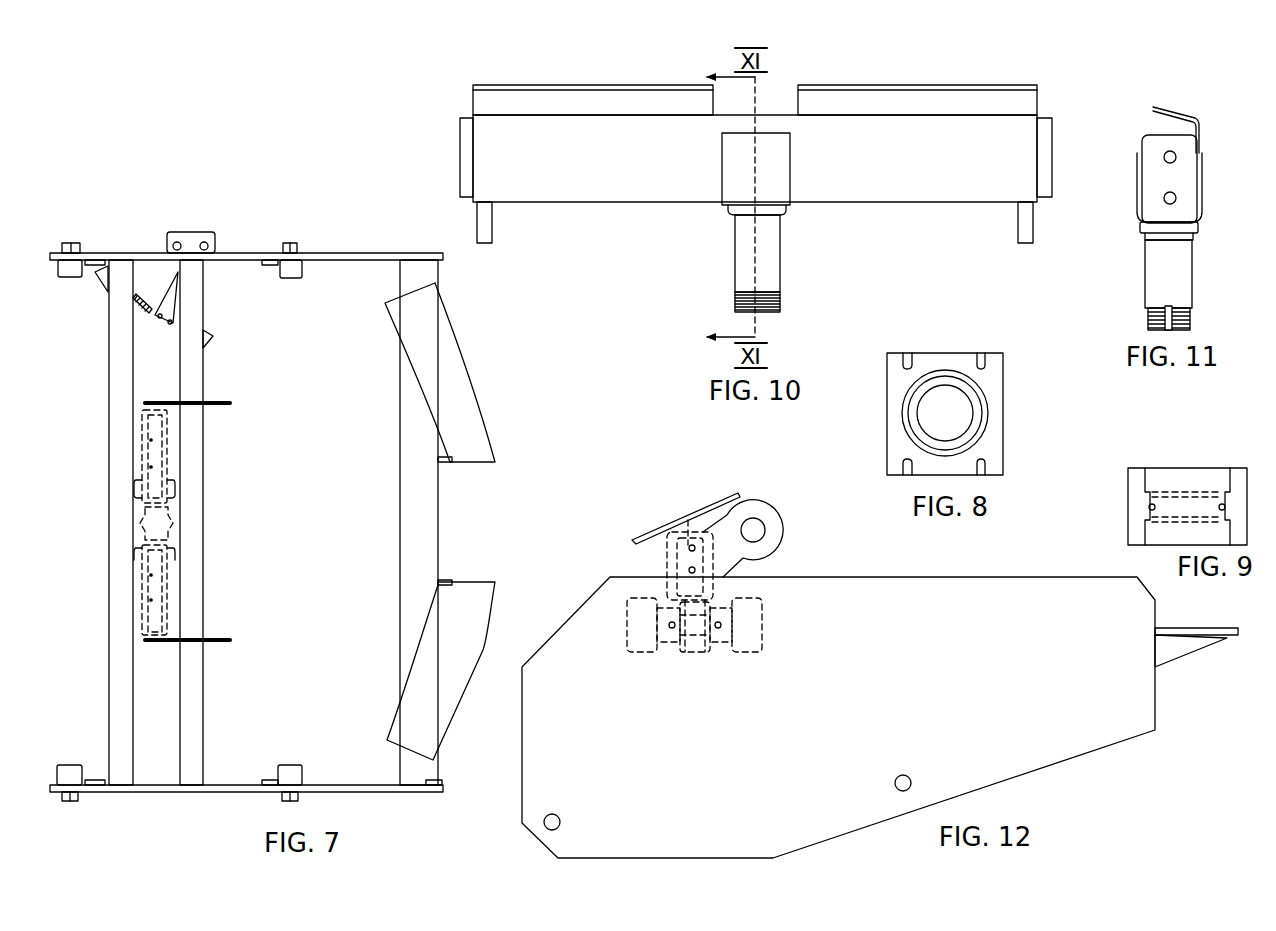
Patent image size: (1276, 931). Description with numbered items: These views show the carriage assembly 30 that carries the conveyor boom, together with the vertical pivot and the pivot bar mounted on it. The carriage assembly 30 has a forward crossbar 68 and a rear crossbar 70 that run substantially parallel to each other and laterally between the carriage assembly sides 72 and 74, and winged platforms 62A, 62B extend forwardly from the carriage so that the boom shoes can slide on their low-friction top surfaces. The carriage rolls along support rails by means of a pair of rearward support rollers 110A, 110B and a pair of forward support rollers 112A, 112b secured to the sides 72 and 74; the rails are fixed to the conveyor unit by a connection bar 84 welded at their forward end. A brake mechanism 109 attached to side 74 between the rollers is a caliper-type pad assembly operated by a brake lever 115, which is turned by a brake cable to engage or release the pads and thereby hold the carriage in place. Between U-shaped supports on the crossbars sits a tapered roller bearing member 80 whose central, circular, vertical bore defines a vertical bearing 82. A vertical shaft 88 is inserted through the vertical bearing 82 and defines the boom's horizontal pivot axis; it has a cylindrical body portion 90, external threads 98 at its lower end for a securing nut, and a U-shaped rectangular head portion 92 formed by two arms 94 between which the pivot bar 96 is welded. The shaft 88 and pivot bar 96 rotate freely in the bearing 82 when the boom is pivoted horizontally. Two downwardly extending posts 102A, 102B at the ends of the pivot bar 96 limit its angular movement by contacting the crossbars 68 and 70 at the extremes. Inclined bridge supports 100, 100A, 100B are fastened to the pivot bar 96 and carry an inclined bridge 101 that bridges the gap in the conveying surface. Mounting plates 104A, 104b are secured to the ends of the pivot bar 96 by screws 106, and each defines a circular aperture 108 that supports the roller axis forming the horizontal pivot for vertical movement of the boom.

In FIG. 7, the carriage assembly 30 is at (447, 533).
In FIG. 7, the winged platform 62A is at (440, 712).
In FIG. 12, the winged platform 62A is at (1175, 628).
In FIG. 7, the winged platform 62B is at (470, 400).
In FIG. 7, the forward crossbar 68 is at (193, 700).
In FIG. 12, the forward crossbar 68 is at (765, 625).
In FIG. 7, the rear crossbar 70 is at (118, 652).
In FIG. 12, the rear crossbar 70 is at (630, 655).
In FIG. 7, the carriage assembly side 72 is at (163, 790).
In FIG. 7, the carriage assembly side 74 is at (325, 253).
In FIG. 7, the tapered roller bearing member 80 is at (173, 535).
In FIG. 8, the tapered roller bearing member 80 is at (952, 350).
In FIG. 9, the tapered roller bearing member 80 is at (1127, 488).
In FIG. 12, the tapered roller bearing member 80 is at (717, 645).
In FIG. 8, the vertical bearing 82 is at (945, 412).
In FIG. 9, the vertical bearing 82 is at (1170, 508).
In FIG. 8, the connection bar 84 is at (905, 360).
In FIG. 9, the connection bar 84 is at (1222, 505).
In FIG. 10, the vertical shaft 88 is at (787, 245).
In FIG. 10, the cylindrical body portion 90 is at (740, 248).
In FIG. 11, the cylindrical body portion 90 is at (1153, 265).
In FIG. 12, the cylindrical body portion 90 is at (695, 652).
In FIG. 11, the U-shaped rectangular head portion 92 is at (1205, 225).
In FIG. 11, the arm 94 is at (1137, 170).
In FIG. 7, the pivot bar 96 is at (157, 443).
In FIG. 10, the pivot bar 96 is at (1030, 140).
In FIG. 11, the pivot bar 96 is at (1155, 143).
In FIG. 12, the pivot bar 96 is at (667, 557).
In FIG. 10, the external threads 98 is at (735, 300).
In FIG. 11, the external threads 98 is at (1195, 315).
In FIG. 11, the inclined bridge support 100 is at (1180, 110).
In FIG. 7, the inclined bridge support 100A is at (150, 585).
In FIG. 10, the inclined bridge support 100A is at (880, 100).
In FIG. 7, the inclined bridge support 100B is at (133, 452).
In FIG. 10, the inclined bridge support 100B is at (515, 100).
In FIG. 12, the inclined bridge 101 is at (655, 528).
In FIG. 10, the downwardly extending post 102A is at (485, 225).
In FIG. 10, the downwardly extending post 102B is at (1022, 230).
In FIG. 7, the mounting plate 104A is at (225, 638).
In FIG. 12, the mounting plate 104A is at (770, 545).
In FIG. 7, the mounting plate 104b is at (225, 406).
In FIG. 12, the screw 106 is at (687, 520).
In FIG. 12, the circular aperture 108 is at (753, 530).
In FIG. 7, the brake mechanism 109 is at (190, 232).
In FIG. 7, the rearward support roller 110A is at (65, 765).
In FIG. 7, the rearward support roller 110B is at (72, 277).
In FIG. 7, the forward support roller 112A is at (290, 765).
In FIG. 7, the forward support roller 112b is at (291, 278).
In FIG. 7, the brake lever 115 is at (172, 297).